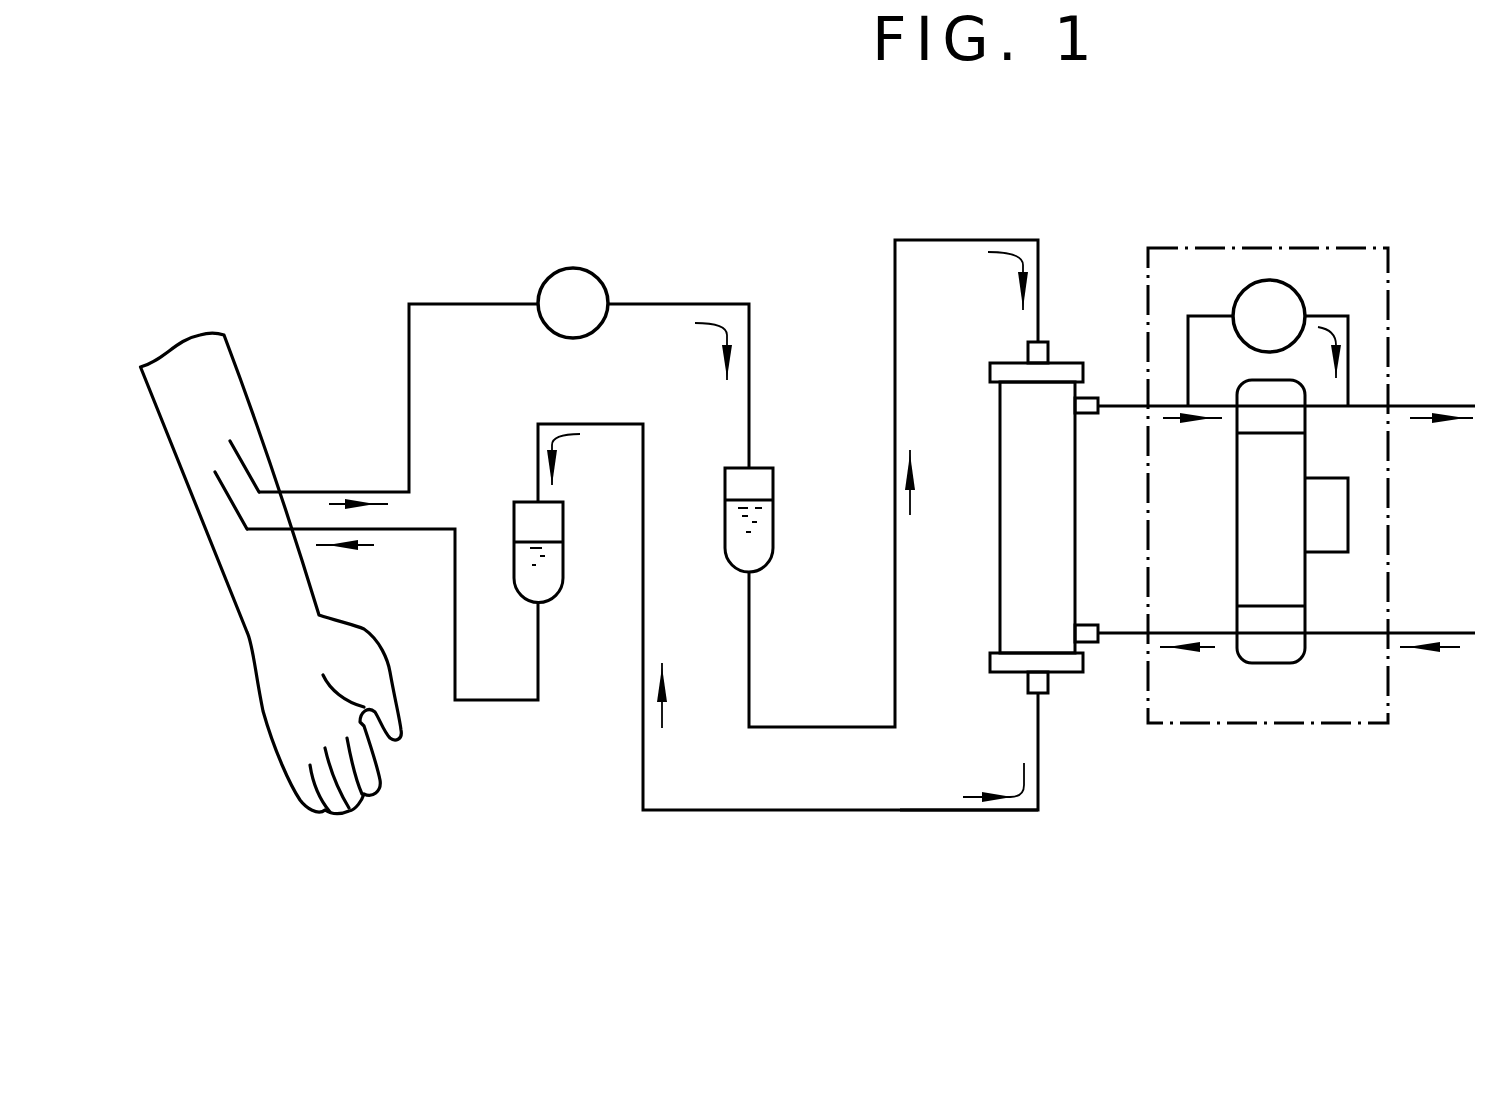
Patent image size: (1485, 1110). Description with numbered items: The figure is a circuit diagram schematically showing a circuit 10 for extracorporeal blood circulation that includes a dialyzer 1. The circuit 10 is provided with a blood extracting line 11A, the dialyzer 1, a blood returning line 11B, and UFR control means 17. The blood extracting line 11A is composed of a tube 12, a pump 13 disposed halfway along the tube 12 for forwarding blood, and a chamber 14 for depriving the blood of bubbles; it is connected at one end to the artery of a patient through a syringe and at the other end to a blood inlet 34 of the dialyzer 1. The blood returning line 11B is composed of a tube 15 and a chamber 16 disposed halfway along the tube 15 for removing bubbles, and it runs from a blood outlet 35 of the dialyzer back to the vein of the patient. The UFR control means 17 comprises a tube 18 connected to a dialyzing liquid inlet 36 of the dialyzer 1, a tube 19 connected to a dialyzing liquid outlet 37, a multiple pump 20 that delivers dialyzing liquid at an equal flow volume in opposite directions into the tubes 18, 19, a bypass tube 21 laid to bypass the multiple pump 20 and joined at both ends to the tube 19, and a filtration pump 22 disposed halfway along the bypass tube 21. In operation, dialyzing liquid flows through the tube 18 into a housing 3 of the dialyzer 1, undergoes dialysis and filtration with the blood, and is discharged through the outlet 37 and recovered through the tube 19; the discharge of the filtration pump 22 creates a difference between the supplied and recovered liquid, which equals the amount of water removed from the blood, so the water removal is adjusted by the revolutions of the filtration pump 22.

The dialyzer 1 is at (988, 558).
The housing 3 is at (1003, 452).
The circuit for extracorporeal blood circulation 10 is at (628, 818).
The blood extracting line 11A is at (949, 237).
The blood returning line 11B is at (938, 812).
The tube 12 is at (690, 303).
The pump 13 is at (571, 268).
The chamber 14 is at (775, 490).
The tube 15 is at (755, 812).
The chamber 16 is at (512, 525).
The UFR control means 17 is at (1270, 725).
The tube 18 is at (1165, 633).
The tube 19 is at (1163, 405).
The multiple pump 20 is at (1287, 522).
The bypass tube 21 is at (1340, 315).
The filtration pump 22 is at (1270, 280).
The blood inlet 34 is at (1028, 351).
The blood outlet 35 is at (1028, 686).
The dialyzing liquid inlet 36 is at (1088, 642).
The dialyzing liquid outlet 37 is at (1085, 396).